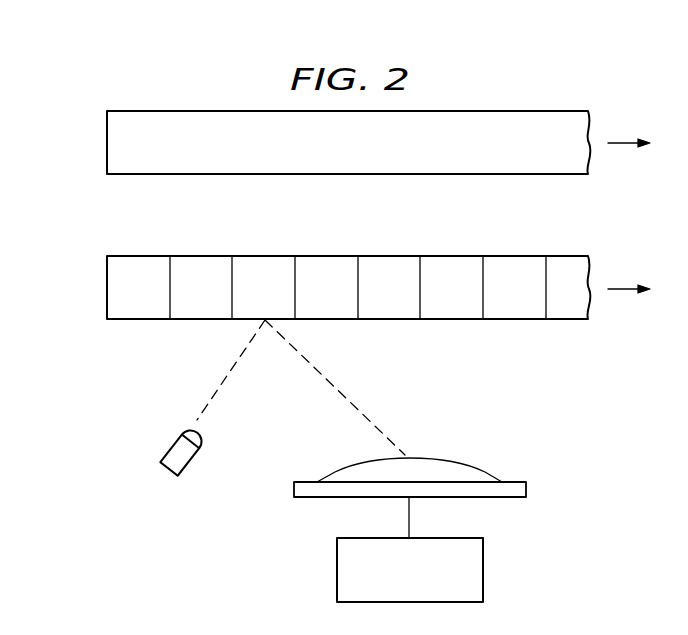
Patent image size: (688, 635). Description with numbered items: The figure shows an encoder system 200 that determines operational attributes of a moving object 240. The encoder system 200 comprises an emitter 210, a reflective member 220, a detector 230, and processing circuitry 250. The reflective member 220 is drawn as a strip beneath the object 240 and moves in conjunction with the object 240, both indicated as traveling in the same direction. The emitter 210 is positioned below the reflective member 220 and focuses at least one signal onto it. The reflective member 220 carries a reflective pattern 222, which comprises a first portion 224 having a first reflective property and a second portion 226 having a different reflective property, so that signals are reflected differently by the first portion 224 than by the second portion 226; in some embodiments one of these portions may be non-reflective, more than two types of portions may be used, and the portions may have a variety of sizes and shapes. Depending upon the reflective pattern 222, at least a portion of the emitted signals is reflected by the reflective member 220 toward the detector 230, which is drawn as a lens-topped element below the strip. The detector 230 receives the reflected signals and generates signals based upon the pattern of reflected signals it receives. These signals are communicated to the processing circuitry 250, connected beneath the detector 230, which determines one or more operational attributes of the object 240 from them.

The encoder system 200 is at (578, 71).
The object 240 is at (200, 111).
The reflective member 220 is at (78, 255).
The first portion 224 is at (138, 255).
The second portion 226 is at (200, 262).
The reflective pattern 222 is at (146, 367).
The emitter 210 is at (165, 471).
The detector 230 is at (528, 492).
The processing circuitry 250 is at (483, 568).